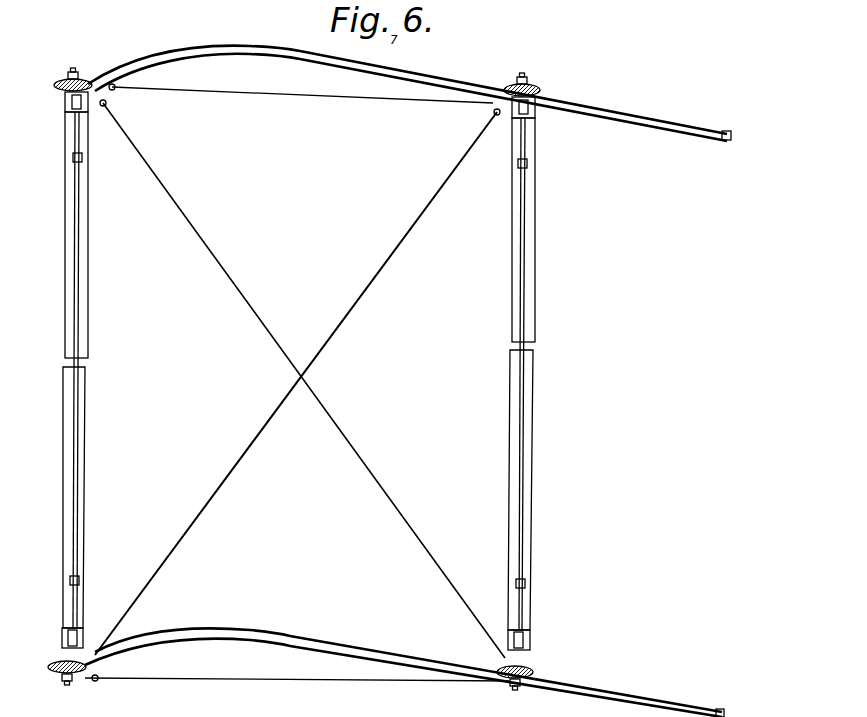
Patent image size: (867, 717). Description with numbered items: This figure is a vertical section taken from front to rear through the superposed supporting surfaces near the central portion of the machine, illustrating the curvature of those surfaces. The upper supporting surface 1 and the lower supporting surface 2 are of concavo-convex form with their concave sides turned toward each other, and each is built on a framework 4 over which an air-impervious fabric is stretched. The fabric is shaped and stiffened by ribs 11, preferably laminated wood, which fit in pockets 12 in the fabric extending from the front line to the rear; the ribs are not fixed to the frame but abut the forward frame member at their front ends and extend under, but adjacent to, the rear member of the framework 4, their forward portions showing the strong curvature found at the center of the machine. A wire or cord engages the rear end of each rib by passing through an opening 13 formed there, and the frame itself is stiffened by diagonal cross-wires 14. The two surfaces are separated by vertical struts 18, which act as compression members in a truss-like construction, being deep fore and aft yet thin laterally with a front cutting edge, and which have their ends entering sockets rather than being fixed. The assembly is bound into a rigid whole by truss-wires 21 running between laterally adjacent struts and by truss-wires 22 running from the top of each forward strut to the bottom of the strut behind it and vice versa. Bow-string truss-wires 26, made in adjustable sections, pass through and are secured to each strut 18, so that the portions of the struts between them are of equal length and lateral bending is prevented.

The upper supporting surface 1 is at (403, 84).
The lower supporting surface 2 is at (384, 657).
The framework 4 is at (68, 79).
The ribs 11 is at (258, 50).
The pockets 12 is at (676, 134).
The opening 13 is at (728, 134).
The diagonal cross-wires 14 is at (263, 95).
The vertical struts 18 is at (88, 440).
The truss-wires 21 is at (78, 302).
The truss-wires 22 is at (213, 258).
The bow-string truss-wires 26 is at (84, 160).